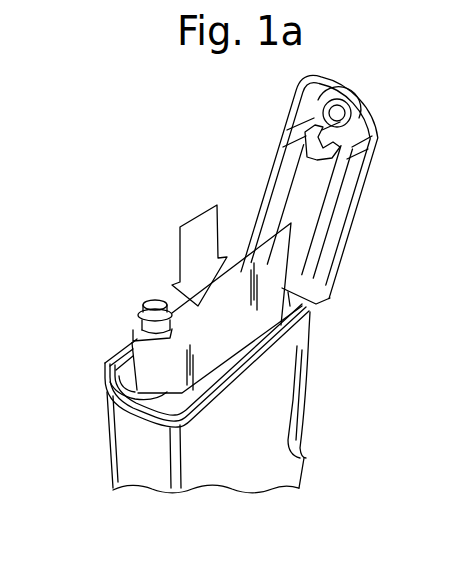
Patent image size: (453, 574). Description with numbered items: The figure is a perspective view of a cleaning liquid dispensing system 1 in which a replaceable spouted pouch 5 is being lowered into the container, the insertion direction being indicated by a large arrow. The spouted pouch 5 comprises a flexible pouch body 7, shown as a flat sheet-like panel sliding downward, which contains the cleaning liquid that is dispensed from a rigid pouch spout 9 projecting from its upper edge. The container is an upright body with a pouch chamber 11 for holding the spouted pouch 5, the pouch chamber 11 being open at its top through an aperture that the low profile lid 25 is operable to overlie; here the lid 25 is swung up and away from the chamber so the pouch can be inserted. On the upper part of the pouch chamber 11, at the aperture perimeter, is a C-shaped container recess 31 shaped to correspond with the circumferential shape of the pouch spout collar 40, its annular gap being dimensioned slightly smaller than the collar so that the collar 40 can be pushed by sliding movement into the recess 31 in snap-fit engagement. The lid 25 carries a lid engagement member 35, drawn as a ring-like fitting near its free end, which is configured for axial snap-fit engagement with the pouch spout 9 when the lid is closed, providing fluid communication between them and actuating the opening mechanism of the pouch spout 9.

The cleaning liquid dispensing system 1 is at (178, 121).
The spouted pouch 5 is at (149, 270).
The flexible pouch body 7 is at (242, 333).
The rigid pouch spout 9 is at (135, 300).
The pouch chamber 11 is at (247, 476).
The lid 25 is at (312, 90).
The container recess 31 is at (109, 381).
The lid engagement member 35 is at (350, 116).
The pouch spout collar 40 is at (138, 316).